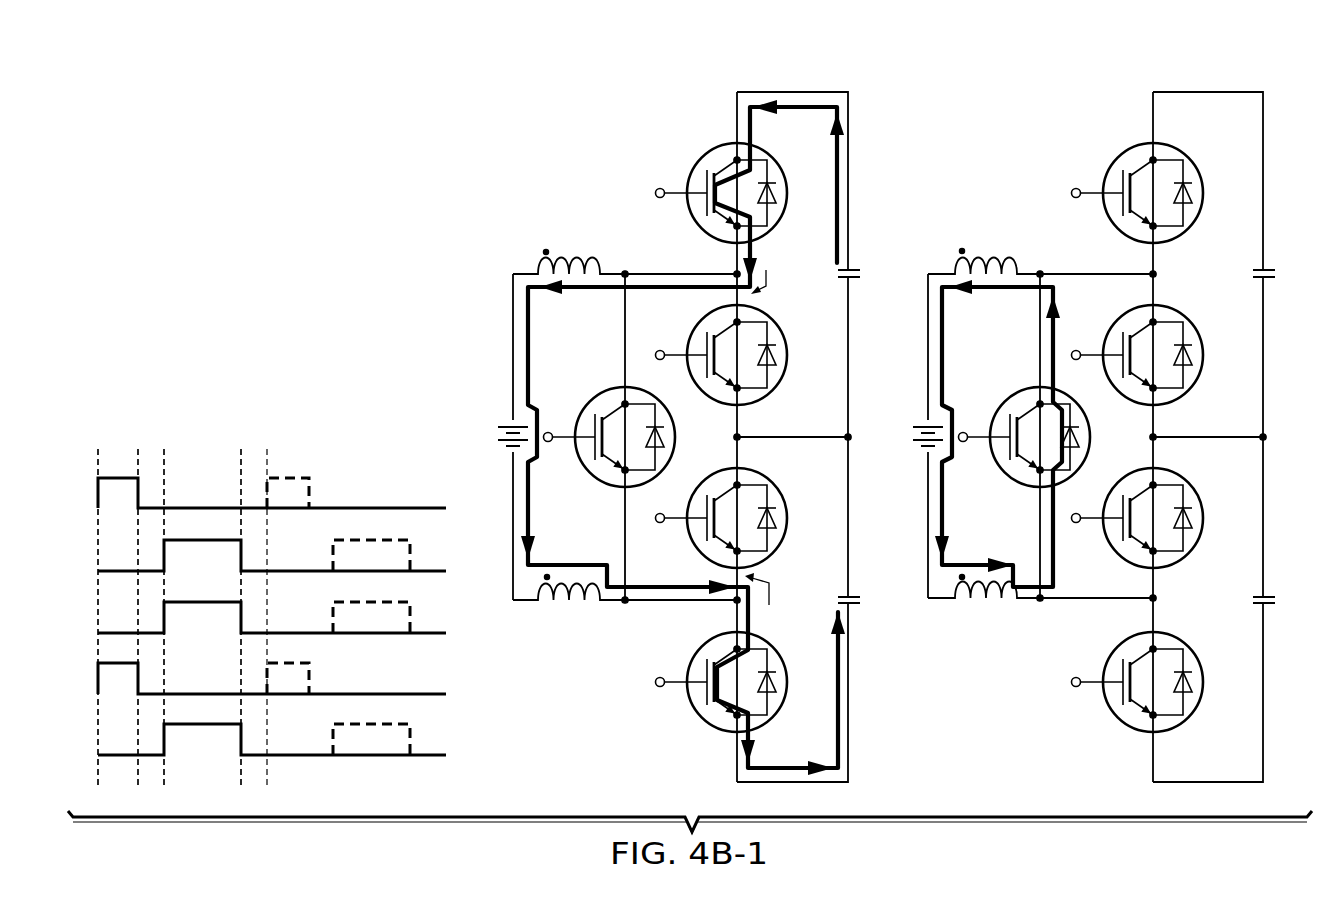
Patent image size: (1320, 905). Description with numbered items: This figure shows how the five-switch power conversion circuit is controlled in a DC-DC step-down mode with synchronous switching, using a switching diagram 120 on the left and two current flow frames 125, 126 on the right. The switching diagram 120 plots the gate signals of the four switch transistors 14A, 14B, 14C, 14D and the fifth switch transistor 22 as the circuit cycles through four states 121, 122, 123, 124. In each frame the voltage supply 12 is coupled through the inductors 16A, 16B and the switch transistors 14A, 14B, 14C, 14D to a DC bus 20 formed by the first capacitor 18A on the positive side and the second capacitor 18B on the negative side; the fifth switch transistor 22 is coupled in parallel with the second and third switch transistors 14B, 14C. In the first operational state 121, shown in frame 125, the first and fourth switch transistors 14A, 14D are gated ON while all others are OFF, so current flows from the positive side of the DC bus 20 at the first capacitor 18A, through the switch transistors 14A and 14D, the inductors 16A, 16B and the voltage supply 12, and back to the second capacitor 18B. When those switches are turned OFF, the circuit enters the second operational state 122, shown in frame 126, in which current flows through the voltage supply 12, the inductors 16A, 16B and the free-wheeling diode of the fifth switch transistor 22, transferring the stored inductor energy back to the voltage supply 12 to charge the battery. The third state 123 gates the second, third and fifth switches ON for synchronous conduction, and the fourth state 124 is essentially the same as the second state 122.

The voltage supply 12 is at (498, 433).
The first switch transistor 14A is at (795, 139).
The second switch transistor 14B is at (795, 302).
The third switch transistor 14C is at (770, 560).
The fourth switch transistor 14D is at (777, 715).
The inductor 16A is at (600, 267).
The inductor 16B is at (547, 595).
The first capacitor 18A is at (860, 277).
The second capacitor 18B is at (860, 603).
The DC bus 20 is at (849, 70).
The fifth switch transistor 22 is at (592, 397).
The switching diagram 120 is at (189, 357).
The first operational state 121 is at (116, 442).
The second operational state 122 is at (154, 442).
The third operational state 123 is at (205, 442).
The fourth state 124 is at (255, 442).
The frame 125 is at (557, 106).
The frame 126 is at (972, 106).